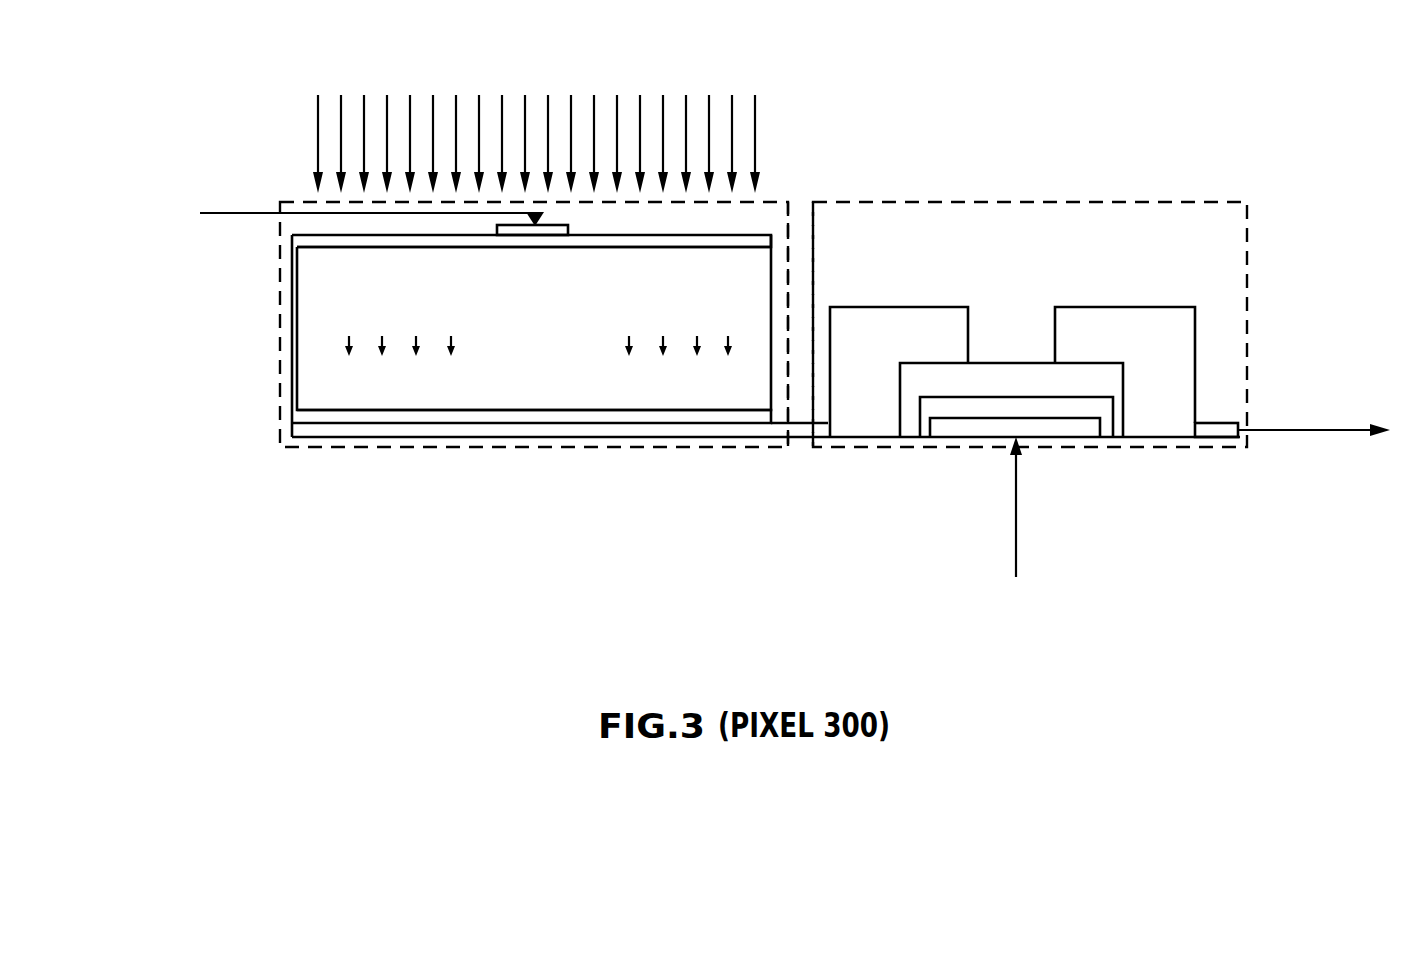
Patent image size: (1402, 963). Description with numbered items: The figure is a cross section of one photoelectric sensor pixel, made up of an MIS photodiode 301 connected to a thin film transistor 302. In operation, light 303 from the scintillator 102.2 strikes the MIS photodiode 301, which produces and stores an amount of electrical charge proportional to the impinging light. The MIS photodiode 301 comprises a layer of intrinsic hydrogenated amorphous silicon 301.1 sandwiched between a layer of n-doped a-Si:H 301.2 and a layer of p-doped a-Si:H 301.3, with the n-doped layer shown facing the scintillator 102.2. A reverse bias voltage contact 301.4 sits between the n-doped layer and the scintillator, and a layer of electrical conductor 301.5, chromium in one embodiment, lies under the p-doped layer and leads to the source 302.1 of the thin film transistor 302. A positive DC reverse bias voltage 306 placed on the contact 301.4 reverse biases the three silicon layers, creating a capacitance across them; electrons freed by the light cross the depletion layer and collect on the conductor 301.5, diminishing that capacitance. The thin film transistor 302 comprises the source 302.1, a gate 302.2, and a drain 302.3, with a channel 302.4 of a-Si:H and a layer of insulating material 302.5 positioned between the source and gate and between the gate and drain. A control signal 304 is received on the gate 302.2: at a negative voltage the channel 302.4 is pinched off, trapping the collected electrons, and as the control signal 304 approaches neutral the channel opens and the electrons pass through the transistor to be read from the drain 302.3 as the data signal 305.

The light 303 is at (536, 105).
The scintillator 102.2 is at (587, 70).
The MIS photodiode 301 is at (512, 448).
The reverse bias voltage 306 is at (309, 181).
The reverse bias voltage contact 301.4 is at (568, 233).
The n-doped a-Si:H layer 301.2 is at (292, 245).
The intrinsic a-Si:H layer 301.1 is at (292, 365).
The p-doped a-Si:H layer 301.3 is at (292, 423).
The electrical conductor 301.5 is at (292, 437).
The thin film transistor 302 is at (1236, 447).
The source 302.1 is at (928, 306).
The drain 302.3 is at (1140, 306).
The channel 302.4 is at (908, 438).
The insulating material layer 302.5 is at (1105, 438).
The gate 302.2 is at (953, 438).
The control signal 304 is at (1110, 546).
The data signal 305 is at (1292, 376).